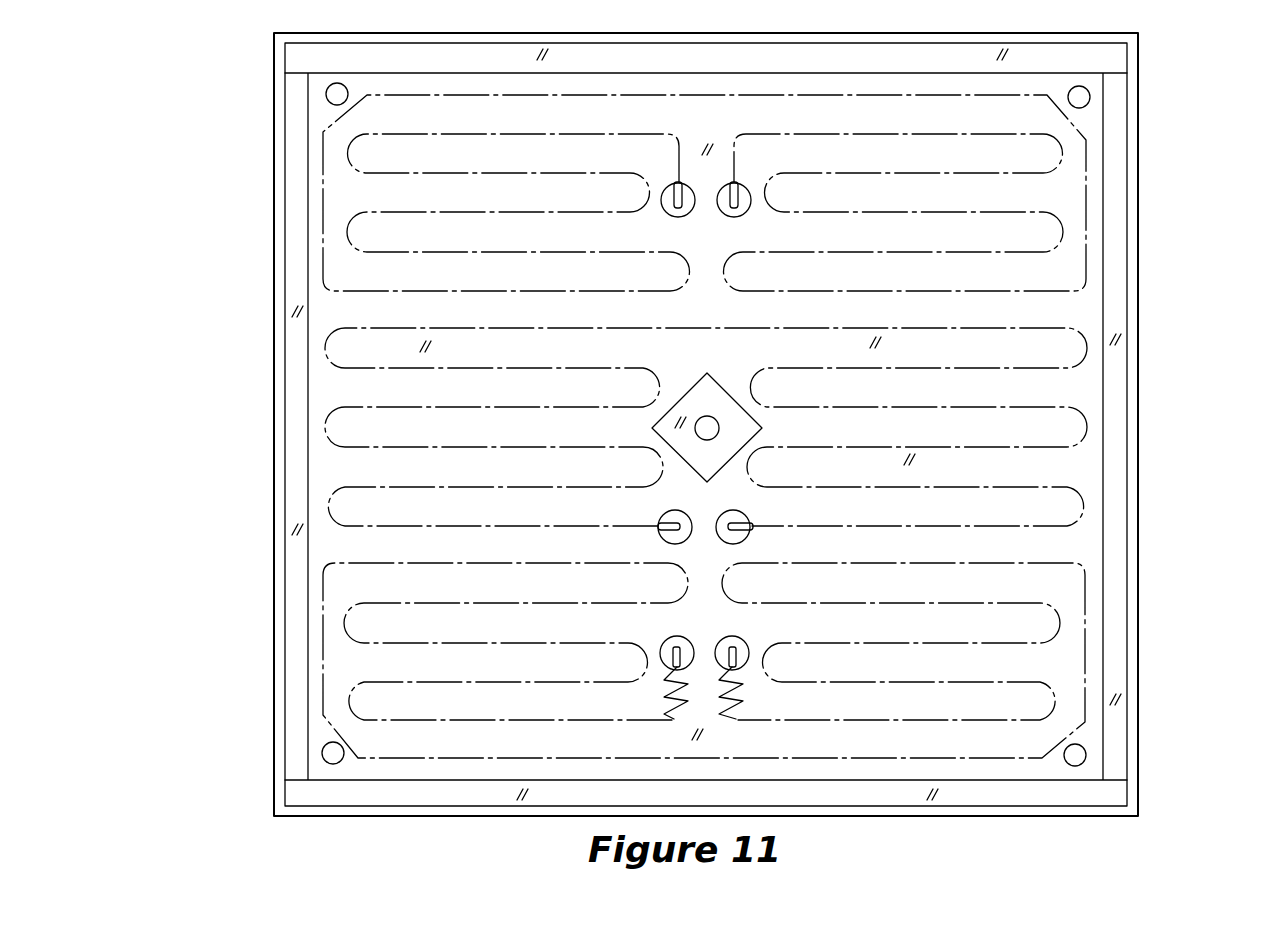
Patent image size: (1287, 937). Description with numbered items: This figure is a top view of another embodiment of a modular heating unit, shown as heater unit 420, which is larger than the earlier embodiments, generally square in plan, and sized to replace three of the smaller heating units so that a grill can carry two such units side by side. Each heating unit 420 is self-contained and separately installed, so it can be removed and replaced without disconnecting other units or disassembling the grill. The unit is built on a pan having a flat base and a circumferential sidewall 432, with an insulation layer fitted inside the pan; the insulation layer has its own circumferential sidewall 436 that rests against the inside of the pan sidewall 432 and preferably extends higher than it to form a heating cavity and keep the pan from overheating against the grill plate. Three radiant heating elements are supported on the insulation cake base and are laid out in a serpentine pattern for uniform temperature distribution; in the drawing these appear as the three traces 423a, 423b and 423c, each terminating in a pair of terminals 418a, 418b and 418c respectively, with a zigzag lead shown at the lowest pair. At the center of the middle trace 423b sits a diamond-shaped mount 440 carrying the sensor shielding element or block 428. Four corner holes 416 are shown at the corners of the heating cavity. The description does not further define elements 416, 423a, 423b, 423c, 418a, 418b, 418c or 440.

The mounting holes 416 is at (326, 96).
The heater unit 420 is at (1198, 198).
The first heating element trace 423a is at (1062, 228).
The second heating element trace 423b is at (325, 427).
The third heating element trace 423c is at (1060, 627).
The terminals of first heating element 418a is at (737, 218).
The terminals of second heating element 418b is at (733, 510).
The terminals of third heating element 418c is at (731, 636).
The sensor mounting pad 440 is at (707, 373).
The sensor shielding element or block 428 is at (745, 429).
The circumferential sidewall of insulation layer 436 is at (1113, 472).
The circumferential sidewall of pan 432 is at (1135, 520).